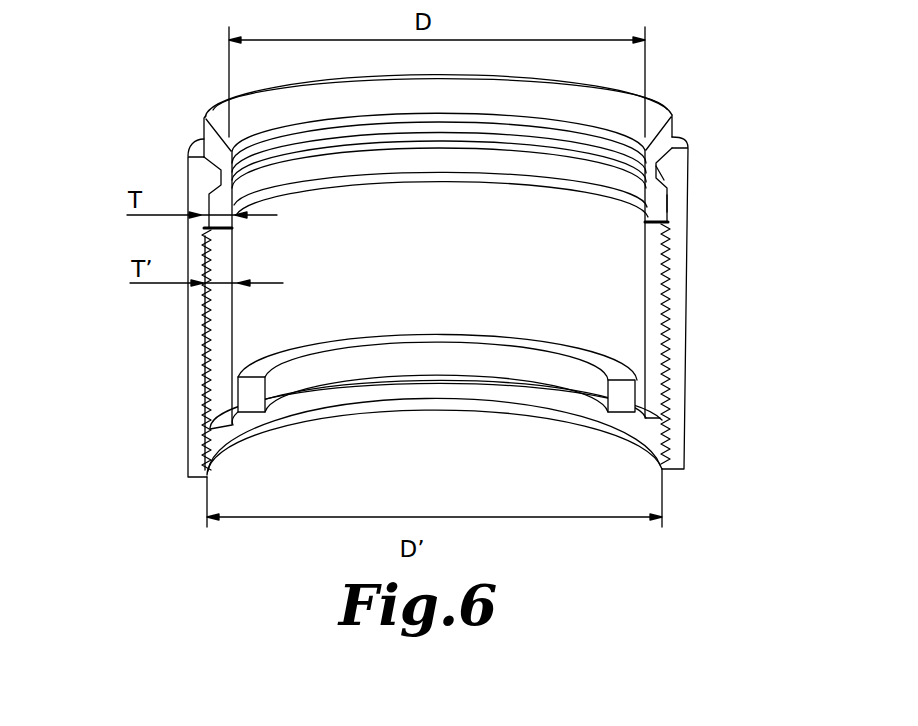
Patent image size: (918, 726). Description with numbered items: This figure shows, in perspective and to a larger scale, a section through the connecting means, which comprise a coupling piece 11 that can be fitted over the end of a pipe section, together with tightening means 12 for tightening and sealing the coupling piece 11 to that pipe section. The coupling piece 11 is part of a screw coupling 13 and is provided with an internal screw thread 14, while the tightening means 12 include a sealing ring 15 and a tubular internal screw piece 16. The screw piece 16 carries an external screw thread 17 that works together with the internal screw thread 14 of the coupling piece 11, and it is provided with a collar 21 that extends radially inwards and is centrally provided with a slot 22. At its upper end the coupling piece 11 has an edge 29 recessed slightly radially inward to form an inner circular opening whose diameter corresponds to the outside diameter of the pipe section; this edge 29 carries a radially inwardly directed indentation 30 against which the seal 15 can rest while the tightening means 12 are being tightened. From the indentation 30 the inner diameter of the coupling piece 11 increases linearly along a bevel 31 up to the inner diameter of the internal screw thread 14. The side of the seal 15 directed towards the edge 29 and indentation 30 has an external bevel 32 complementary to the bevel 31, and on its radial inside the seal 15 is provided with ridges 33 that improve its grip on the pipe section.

The coupling piece 11 is at (683, 315).
The tightening means 12 is at (740, 245).
The screw coupling 13 is at (128, 305).
The internal screw thread 14 is at (262, 427).
The sealing ring 15 is at (659, 204).
The tubular internal screw piece 16 is at (552, 267).
The external screw thread 17 is at (208, 360).
The collar 21 is at (368, 330).
The slot 22 is at (623, 426).
The edge 29 is at (212, 108).
The indentation 30 is at (226, 185).
The bevel 31 is at (652, 187).
The external bevel 32 is at (222, 172).
The ridges 33 is at (605, 155).